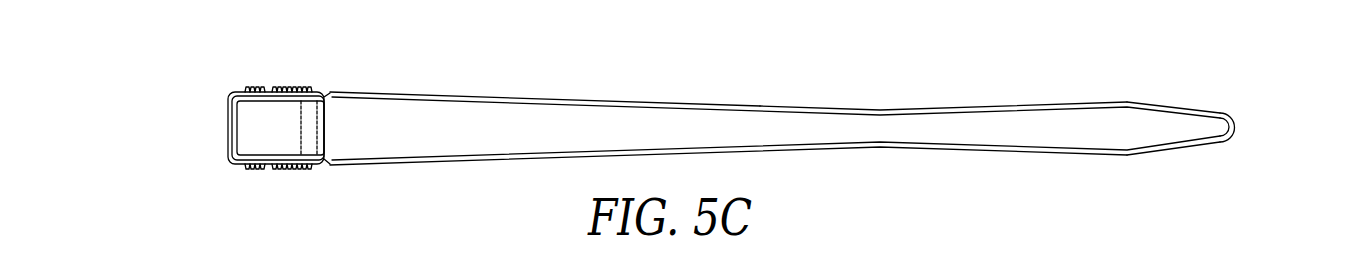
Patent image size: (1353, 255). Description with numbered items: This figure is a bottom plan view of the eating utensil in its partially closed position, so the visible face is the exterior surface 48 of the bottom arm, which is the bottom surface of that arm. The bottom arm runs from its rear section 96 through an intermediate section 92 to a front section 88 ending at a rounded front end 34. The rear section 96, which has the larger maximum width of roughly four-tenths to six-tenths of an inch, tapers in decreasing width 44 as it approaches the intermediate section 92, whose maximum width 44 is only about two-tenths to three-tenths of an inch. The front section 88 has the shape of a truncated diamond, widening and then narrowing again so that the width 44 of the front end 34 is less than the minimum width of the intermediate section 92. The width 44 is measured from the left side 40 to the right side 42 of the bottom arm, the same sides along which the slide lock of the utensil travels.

The front end 34 is at (1233, 132).
The left side 40 is at (417, 165).
The right side 42 is at (417, 93).
The width 44 is at (345, 163).
The exterior surface 48 is at (680, 120).
The front section 88 is at (1105, 77).
The intermediate section 92 is at (786, 92).
The rear section 96 is at (393, 185).